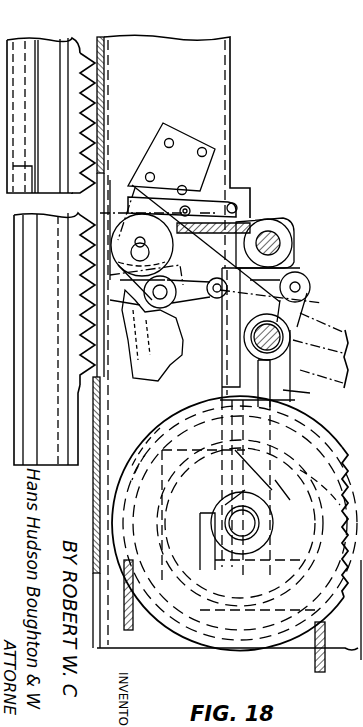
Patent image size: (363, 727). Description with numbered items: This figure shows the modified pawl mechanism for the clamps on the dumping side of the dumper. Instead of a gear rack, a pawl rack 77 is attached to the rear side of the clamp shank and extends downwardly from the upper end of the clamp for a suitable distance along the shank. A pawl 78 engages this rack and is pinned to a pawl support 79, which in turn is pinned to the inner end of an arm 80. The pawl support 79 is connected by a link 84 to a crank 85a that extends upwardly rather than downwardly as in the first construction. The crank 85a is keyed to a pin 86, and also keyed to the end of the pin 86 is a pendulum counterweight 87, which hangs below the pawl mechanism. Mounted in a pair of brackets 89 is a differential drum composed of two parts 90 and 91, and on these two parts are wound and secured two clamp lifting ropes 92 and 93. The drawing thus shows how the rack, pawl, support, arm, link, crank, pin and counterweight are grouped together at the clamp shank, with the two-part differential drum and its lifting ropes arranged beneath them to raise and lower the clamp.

The pawl rack 77 is at (78, 86).
The pawl 78 is at (157, 372).
The pawl support 79 is at (175, 224).
The arm 80 is at (290, 228).
The link 84 is at (301, 276).
The crank 85a is at (308, 300).
The pin 86 is at (252, 338).
The pendulum counterweight 87 is at (297, 392).
The brackets 89 is at (152, 462).
The differential drum part 90 is at (160, 432).
The differential drum part 91 is at (330, 440).
The clamp lifting rope 92 is at (135, 615).
The clamp lifting rope 93 is at (314, 662).